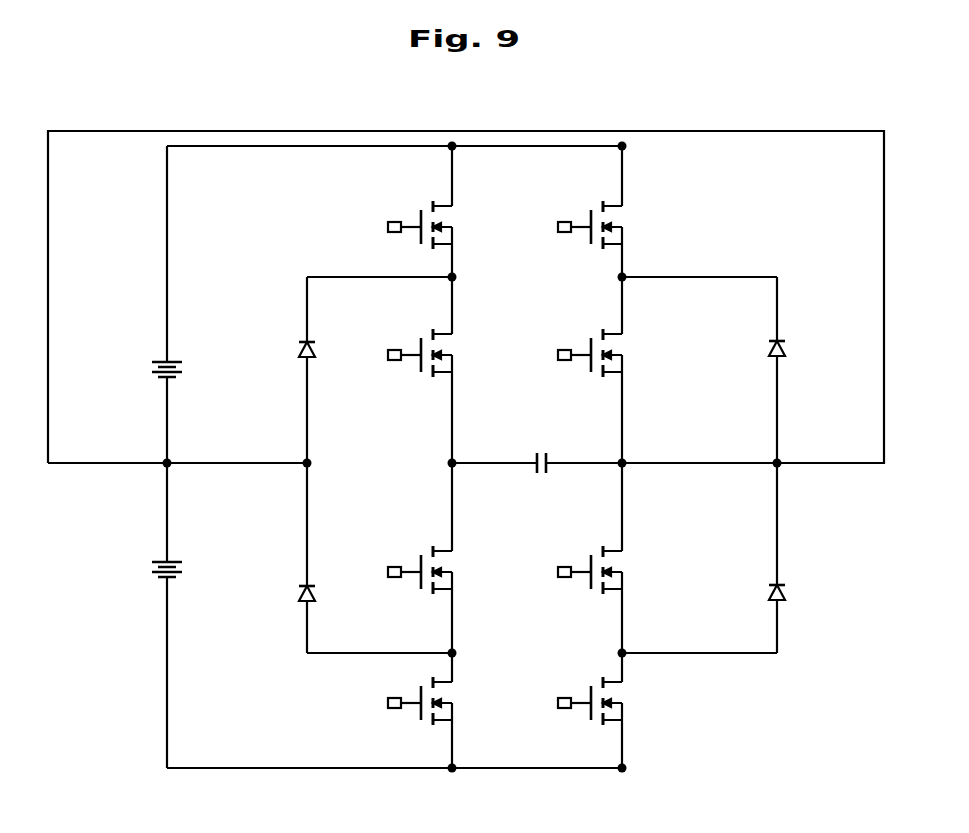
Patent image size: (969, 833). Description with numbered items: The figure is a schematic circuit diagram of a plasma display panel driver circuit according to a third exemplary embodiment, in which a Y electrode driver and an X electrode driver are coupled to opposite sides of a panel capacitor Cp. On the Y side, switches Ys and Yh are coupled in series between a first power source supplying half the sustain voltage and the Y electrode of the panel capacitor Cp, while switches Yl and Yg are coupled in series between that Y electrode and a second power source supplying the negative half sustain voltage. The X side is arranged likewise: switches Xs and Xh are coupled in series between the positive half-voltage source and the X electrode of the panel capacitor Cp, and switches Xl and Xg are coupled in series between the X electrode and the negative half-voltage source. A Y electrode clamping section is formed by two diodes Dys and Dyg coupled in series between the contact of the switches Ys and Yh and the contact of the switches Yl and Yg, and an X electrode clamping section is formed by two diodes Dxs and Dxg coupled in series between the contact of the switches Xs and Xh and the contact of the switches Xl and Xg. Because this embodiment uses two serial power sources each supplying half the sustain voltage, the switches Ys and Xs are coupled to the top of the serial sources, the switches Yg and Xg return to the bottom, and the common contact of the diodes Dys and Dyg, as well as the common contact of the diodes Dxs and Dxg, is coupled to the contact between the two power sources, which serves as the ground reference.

The switch Ys is at (417, 217).
The switch Yh is at (417, 347).
The switch Yl is at (417, 561).
The switch Yg is at (417, 697).
The switch Xs is at (587, 217).
The switch Xh is at (587, 347).
The switch Xl is at (587, 561).
The switch Xg is at (587, 697).
The diode Dys is at (282, 348).
The diode Dyg is at (282, 596).
The diode Dxs is at (802, 350).
The diode Dxg is at (804, 599).
The panel capacitor Cp is at (540, 447).